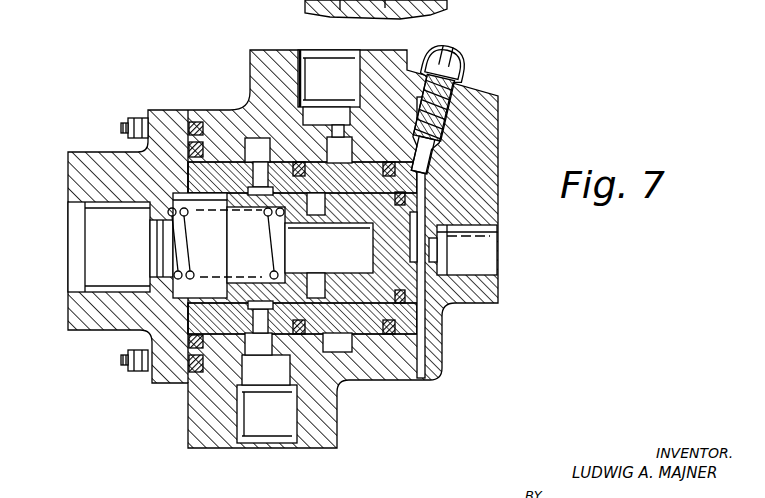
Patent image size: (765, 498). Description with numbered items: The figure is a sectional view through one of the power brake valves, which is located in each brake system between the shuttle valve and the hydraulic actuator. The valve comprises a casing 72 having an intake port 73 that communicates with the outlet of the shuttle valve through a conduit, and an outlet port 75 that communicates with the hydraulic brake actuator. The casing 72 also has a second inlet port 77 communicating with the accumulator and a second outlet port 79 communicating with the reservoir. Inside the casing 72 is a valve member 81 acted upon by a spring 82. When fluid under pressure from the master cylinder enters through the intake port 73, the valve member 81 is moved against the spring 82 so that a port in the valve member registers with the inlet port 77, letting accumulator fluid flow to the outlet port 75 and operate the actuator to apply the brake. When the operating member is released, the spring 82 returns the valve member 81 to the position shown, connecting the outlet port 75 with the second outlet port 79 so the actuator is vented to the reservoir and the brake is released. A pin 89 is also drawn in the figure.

The casing 72 is at (395, 370).
The intake port 73 is at (480, 263).
The outlet port 75 is at (93, 273).
The second inlet port 77 is at (272, 430).
The second outlet port 79 is at (318, 62).
The valve member 81 is at (362, 257).
The spring 82 is at (190, 260).
The pin 89 is at (316, 285).